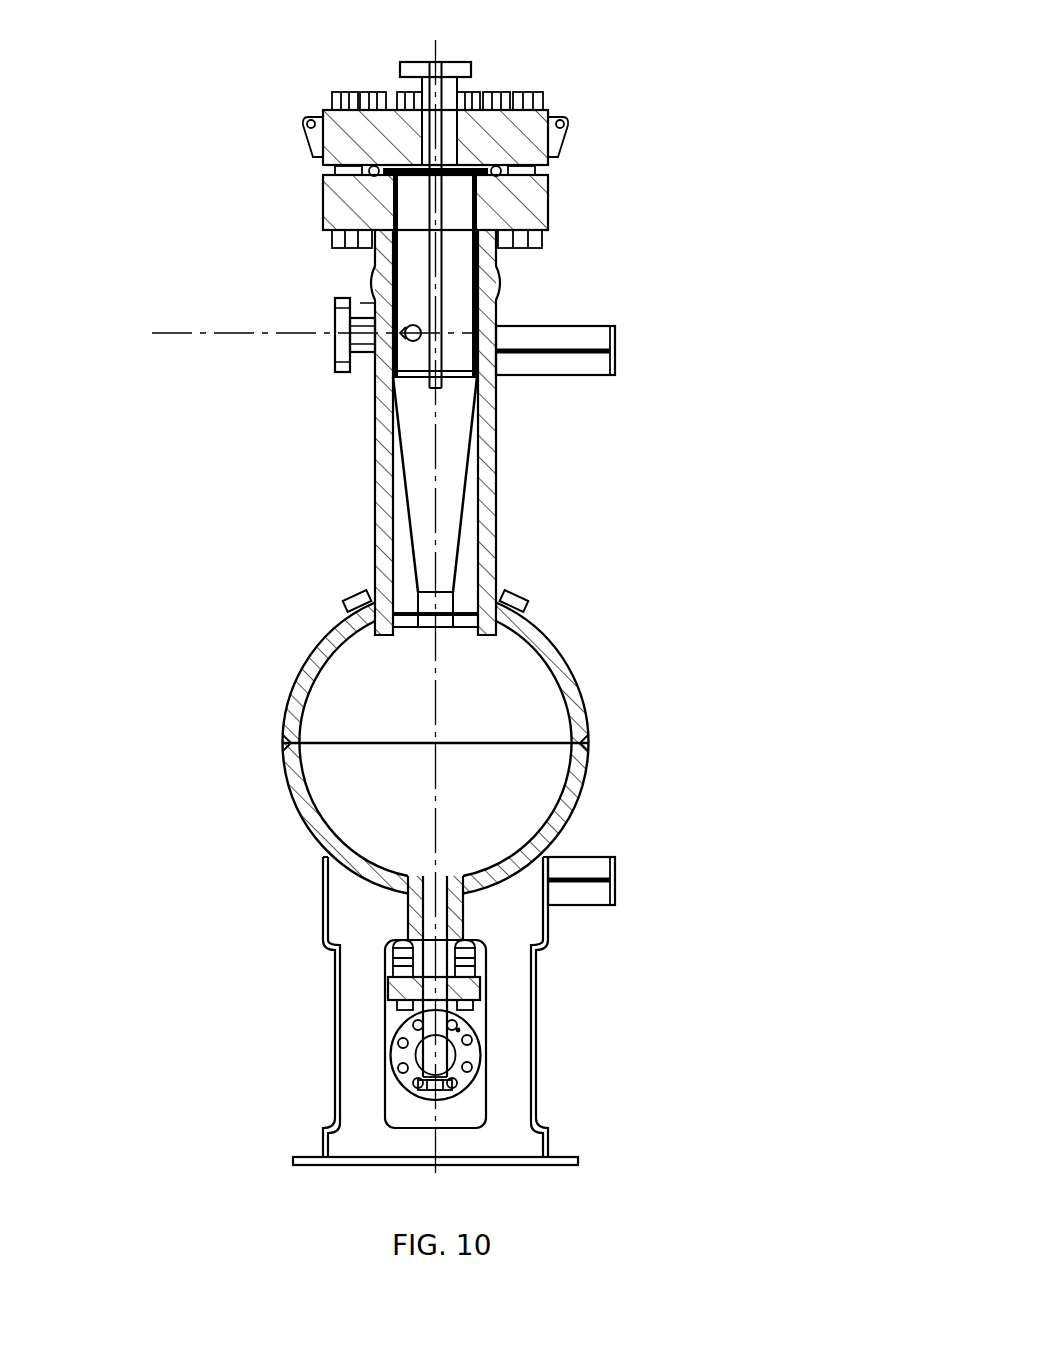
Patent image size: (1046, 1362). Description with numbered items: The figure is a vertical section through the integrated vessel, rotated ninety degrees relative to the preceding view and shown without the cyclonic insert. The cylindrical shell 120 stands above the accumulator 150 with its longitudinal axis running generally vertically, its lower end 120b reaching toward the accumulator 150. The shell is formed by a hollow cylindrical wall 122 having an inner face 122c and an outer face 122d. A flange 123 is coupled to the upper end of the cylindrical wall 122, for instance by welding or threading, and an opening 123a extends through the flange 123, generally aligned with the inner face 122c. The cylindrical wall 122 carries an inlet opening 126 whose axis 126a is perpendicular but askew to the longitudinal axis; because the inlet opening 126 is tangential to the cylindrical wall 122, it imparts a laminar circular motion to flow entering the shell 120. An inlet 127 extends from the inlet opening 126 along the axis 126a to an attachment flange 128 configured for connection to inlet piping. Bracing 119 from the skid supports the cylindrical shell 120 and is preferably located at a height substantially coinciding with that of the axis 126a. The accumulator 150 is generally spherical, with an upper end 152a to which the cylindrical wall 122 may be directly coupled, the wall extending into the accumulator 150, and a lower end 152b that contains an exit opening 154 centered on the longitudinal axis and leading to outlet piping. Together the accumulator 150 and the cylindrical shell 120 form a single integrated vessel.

The bracing 119 is at (594, 375).
The cylindrical shell 120 is at (582, 443).
The lower end of cylindrical shell 120b is at (484, 651).
The hollow cylindrical wall 122 is at (375, 460).
The inner face of cylindrical wall 122c is at (435, 515).
The outer face of cylindrical wall 122d is at (435, 515).
The flange 123 is at (537, 202).
The opening of flange 123a is at (458, 205).
The inlet opening 126 is at (375, 308).
The axis of inlet opening 126a is at (193, 333).
The inlet 127 is at (318, 317).
The attachment flange 128 is at (333, 365).
The accumulator 150 is at (621, 740).
The upper end of accumulator 152a is at (366, 639).
The lower end of accumulator 152b is at (358, 900).
The exit opening 154 is at (409, 864).